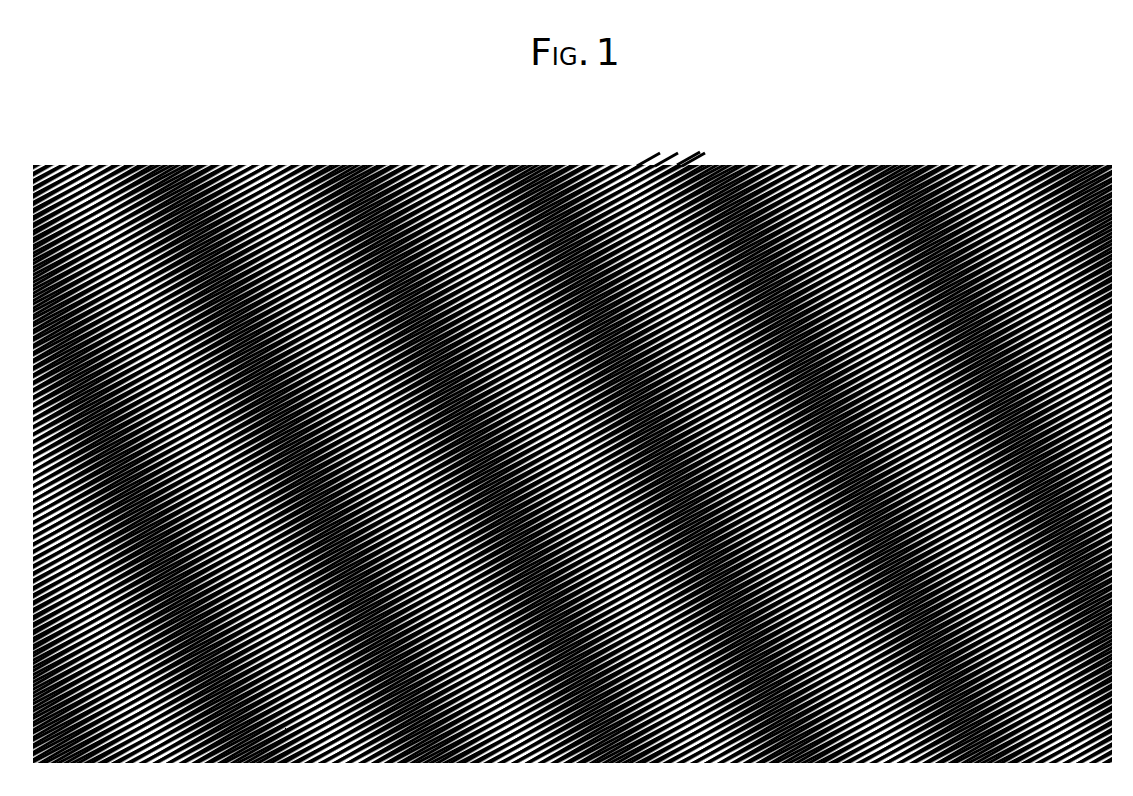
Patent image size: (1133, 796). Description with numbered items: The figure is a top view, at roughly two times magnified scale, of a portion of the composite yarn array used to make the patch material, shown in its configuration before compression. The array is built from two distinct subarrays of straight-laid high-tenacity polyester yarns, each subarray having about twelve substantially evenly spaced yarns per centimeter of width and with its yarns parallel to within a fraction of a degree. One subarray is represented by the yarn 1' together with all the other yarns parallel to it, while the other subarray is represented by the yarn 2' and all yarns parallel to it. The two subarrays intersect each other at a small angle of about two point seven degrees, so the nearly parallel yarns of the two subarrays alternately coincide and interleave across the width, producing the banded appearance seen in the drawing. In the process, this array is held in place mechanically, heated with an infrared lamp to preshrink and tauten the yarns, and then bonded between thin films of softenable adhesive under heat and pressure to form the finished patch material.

The yarn 1' is at (701, 131).
The yarn 2' is at (730, 131).